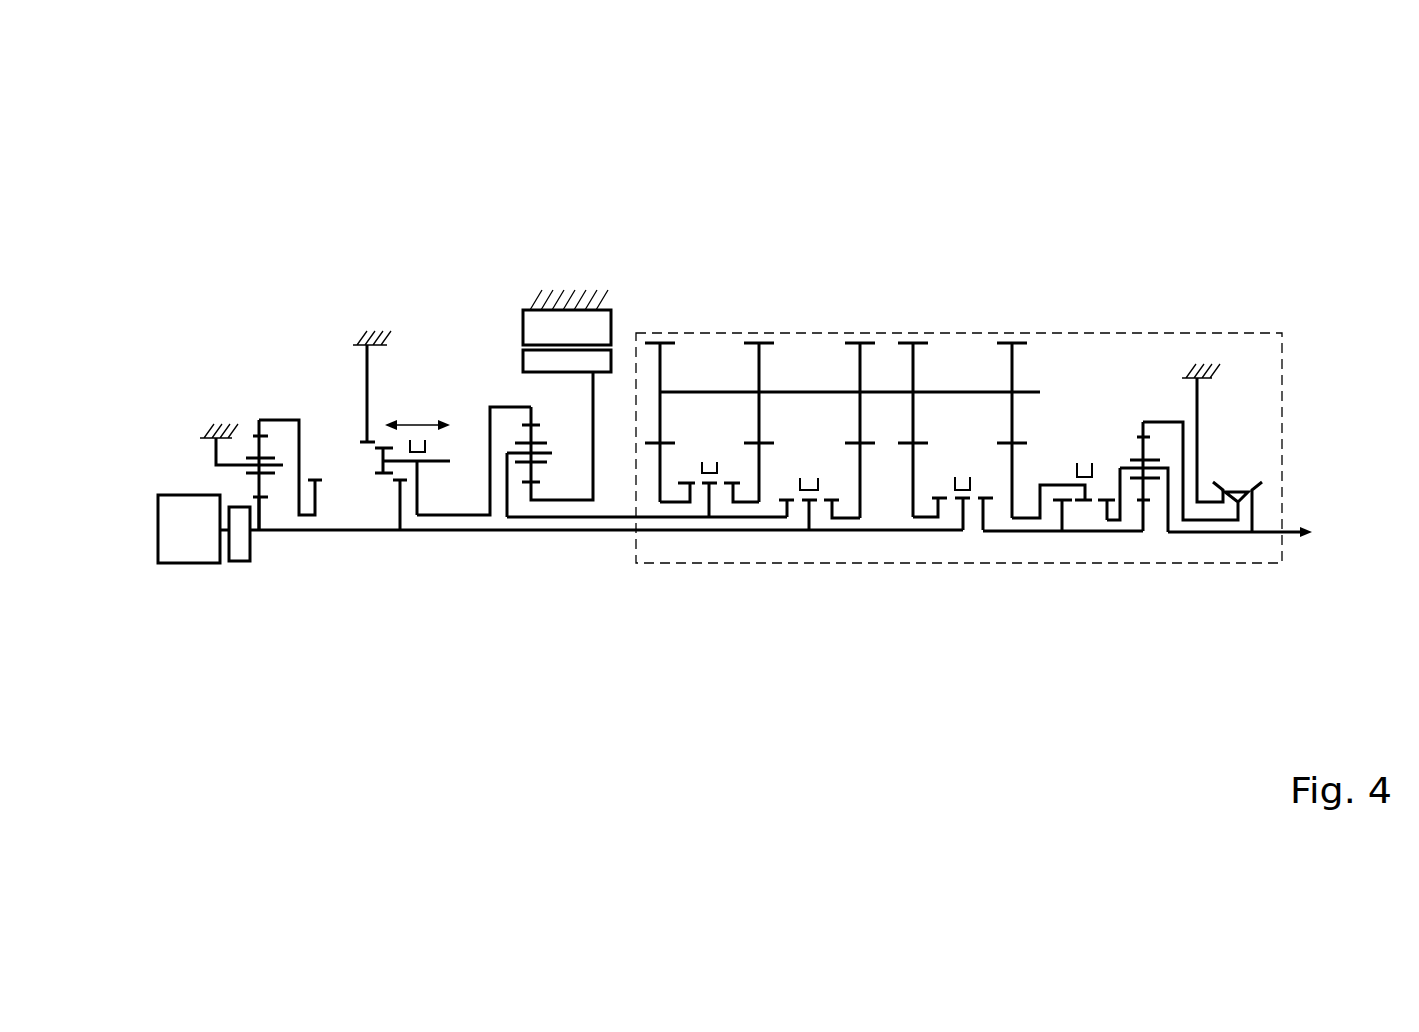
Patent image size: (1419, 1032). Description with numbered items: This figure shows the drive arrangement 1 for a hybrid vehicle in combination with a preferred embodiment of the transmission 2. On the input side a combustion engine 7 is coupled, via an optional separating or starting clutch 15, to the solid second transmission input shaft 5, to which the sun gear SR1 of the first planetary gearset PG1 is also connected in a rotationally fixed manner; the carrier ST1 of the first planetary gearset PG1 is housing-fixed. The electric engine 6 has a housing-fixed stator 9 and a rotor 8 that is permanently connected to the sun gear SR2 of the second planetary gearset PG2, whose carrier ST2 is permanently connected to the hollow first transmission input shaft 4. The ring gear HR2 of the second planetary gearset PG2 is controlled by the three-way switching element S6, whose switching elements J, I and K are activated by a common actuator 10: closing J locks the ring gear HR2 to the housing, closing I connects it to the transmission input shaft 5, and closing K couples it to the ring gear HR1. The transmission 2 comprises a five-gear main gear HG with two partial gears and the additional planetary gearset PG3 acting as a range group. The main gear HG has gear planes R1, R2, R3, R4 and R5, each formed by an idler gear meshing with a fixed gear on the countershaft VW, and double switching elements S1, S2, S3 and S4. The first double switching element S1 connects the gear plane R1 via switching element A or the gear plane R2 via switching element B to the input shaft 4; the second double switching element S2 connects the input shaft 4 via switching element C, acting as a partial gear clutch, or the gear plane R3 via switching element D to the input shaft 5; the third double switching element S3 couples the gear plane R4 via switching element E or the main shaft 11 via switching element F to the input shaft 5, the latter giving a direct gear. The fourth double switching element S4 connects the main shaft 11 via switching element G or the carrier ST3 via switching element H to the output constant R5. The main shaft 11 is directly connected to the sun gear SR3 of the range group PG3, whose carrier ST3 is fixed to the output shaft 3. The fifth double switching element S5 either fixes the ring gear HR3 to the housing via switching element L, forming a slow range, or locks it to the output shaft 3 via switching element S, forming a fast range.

The drive arrangement 1 is at (657, 88).
The transmission 2 is at (1277, 335).
The output shaft 3 is at (1292, 532).
The first transmission input shaft 4 is at (595, 517).
The second transmission input shaft 5 is at (617, 533).
The electric engine 6 is at (627, 155).
The combustion engine 7 is at (203, 525).
The rotor 8 is at (607, 360).
The stator 9 is at (537, 335).
The common actuator 10 is at (440, 445).
The main shaft 11 is at (1028, 537).
The separating clutch or starting clutch 15 is at (239, 560).
The main gear HG is at (1115, 151).
The first planetary gearset PG1 is at (259, 360).
The second planetary gearset PG2 is at (530, 578).
The additional planetary gearset PG3 is at (1145, 367).
The ring gear of first planetary gearset HR1 is at (258, 420).
The ring gear of second planetary gearset HR2 is at (523, 417).
The ring gear of third planetary gearset HR3 is at (1140, 430).
The carrier of first planetary gearset ST1 is at (228, 472).
The carrier of second planetary gearset ST2 is at (547, 455).
The carrier of third planetary gearset ST3 is at (1165, 467).
The sun gear of first planetary gearset SR1 is at (262, 513).
The sun gear of second planetary gearset SR2 is at (530, 483).
The sun gear of third planetary gearset SR3 is at (1150, 520).
The first gear plane R1 is at (659, 322).
The second gear plane R2 is at (759, 322).
The third gear plane R3 is at (860, 322).
The fourth gear plane R4 is at (913, 322).
The fifth gear plane R5 is at (1013, 322).
The countershaft VW is at (947, 392).
The first double switching element S1 is at (740, 431).
The second double switching element S2 is at (840, 450).
The third double switching element S3 is at (993, 450).
The fourth double switching element S4 is at (1117, 426).
The fifth double switching element S5 is at (1267, 426).
The three-way switching element S6 is at (427, 548).
The switching element A is at (678, 471).
The switching element B is at (740, 471).
The switching element C is at (788, 486).
The switching element D is at (842, 487).
The switching element E is at (930, 486).
The switching element F is at (985, 493).
The switching element G is at (1052, 475).
The switching element H is at (1106, 476).
The second switching element I is at (395, 505).
The first switching element J is at (365, 500).
The third switching element K is at (324, 496).
The switching element L is at (1204, 433).
The switching element S is at (1259, 482).